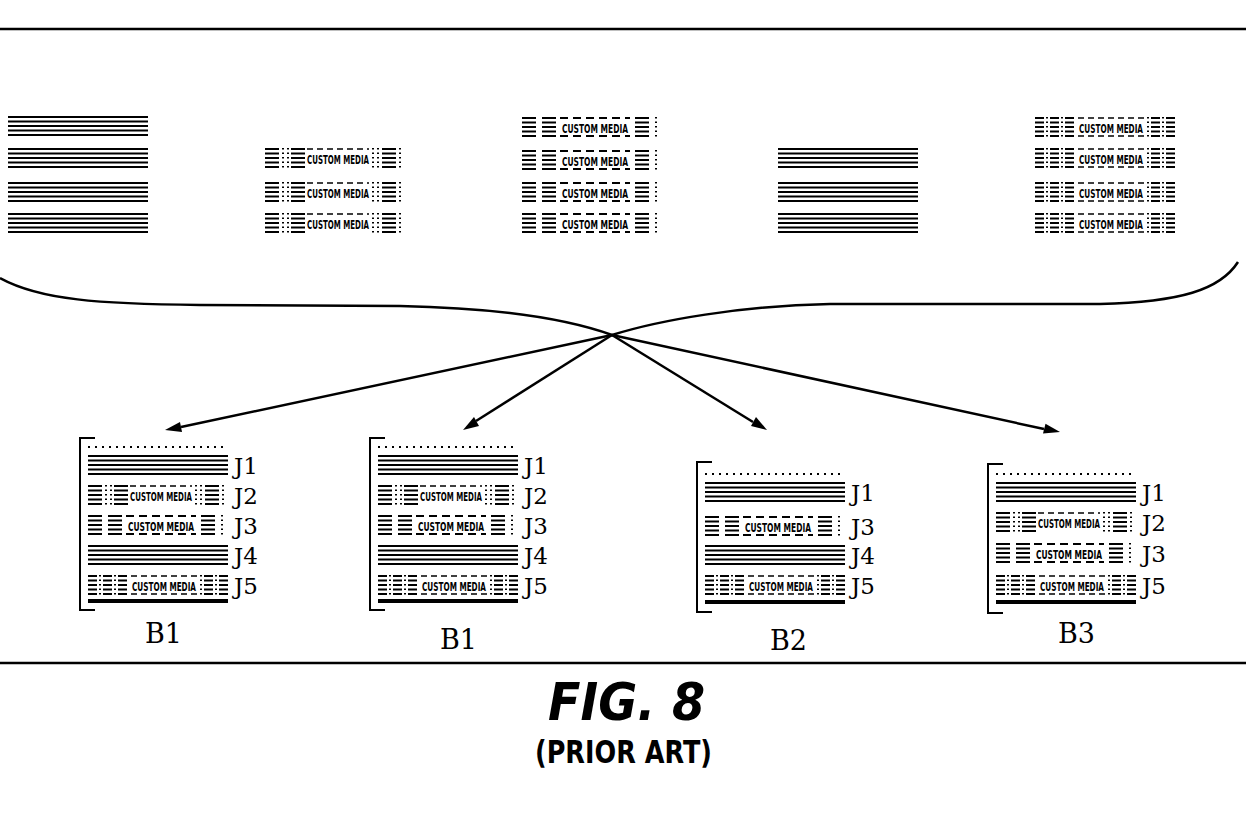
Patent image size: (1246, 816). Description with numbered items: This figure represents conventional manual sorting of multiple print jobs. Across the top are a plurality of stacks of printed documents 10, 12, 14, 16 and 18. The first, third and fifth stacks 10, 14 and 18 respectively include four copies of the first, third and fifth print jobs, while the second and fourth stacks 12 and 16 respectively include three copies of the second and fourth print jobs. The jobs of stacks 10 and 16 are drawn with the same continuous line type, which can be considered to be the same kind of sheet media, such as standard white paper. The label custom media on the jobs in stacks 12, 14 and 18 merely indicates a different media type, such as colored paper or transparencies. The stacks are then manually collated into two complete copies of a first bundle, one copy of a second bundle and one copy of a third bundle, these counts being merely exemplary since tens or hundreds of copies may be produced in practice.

The stack of printed documents 10 is at (72, 94).
The stack of printed documents 12 is at (345, 94).
The stack of printed documents 14 is at (615, 94).
The stack of printed documents 16 is at (860, 94).
The stack of printed documents 18 is at (1108, 94).